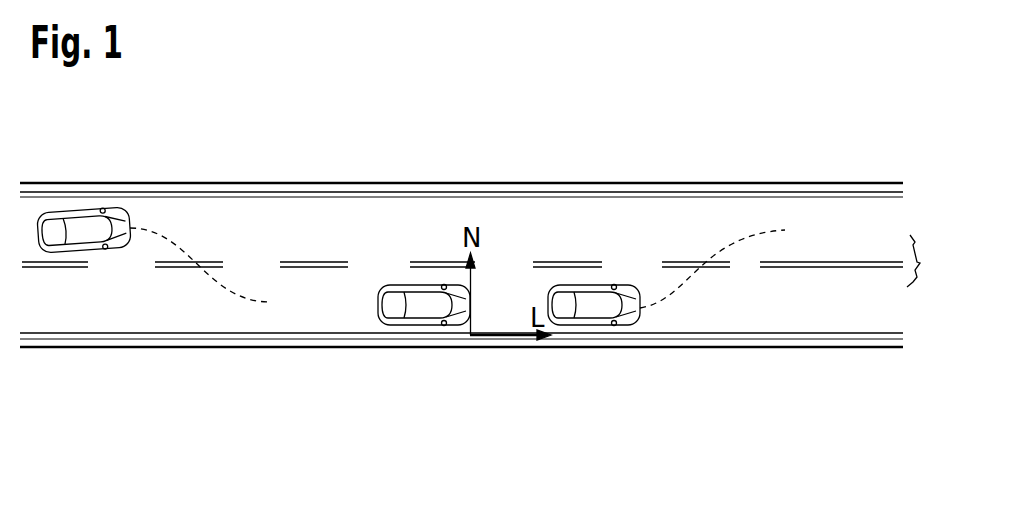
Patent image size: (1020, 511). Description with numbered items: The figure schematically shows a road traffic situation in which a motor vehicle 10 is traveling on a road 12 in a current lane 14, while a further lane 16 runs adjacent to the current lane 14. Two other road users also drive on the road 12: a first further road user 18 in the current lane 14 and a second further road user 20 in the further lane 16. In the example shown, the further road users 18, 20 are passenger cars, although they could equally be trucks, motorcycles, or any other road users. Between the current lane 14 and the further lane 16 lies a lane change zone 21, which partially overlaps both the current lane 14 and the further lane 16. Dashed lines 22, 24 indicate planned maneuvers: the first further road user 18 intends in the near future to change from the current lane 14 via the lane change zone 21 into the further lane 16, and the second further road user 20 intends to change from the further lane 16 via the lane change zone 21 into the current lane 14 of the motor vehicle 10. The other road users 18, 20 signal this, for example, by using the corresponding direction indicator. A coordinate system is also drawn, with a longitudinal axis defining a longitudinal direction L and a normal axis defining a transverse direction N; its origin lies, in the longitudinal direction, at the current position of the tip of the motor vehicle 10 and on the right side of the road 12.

The motor vehicle 10 is at (415, 310).
The road 12 is at (303, 170).
The current lane 14 is at (841, 318).
The further lane 16 is at (841, 213).
The first further road user 18 is at (586, 310).
The second further road user 20 is at (82, 230).
The lane change zone 21 is at (920, 263).
The dashed line 22 is at (758, 234).
The dashed line 24 is at (166, 236).